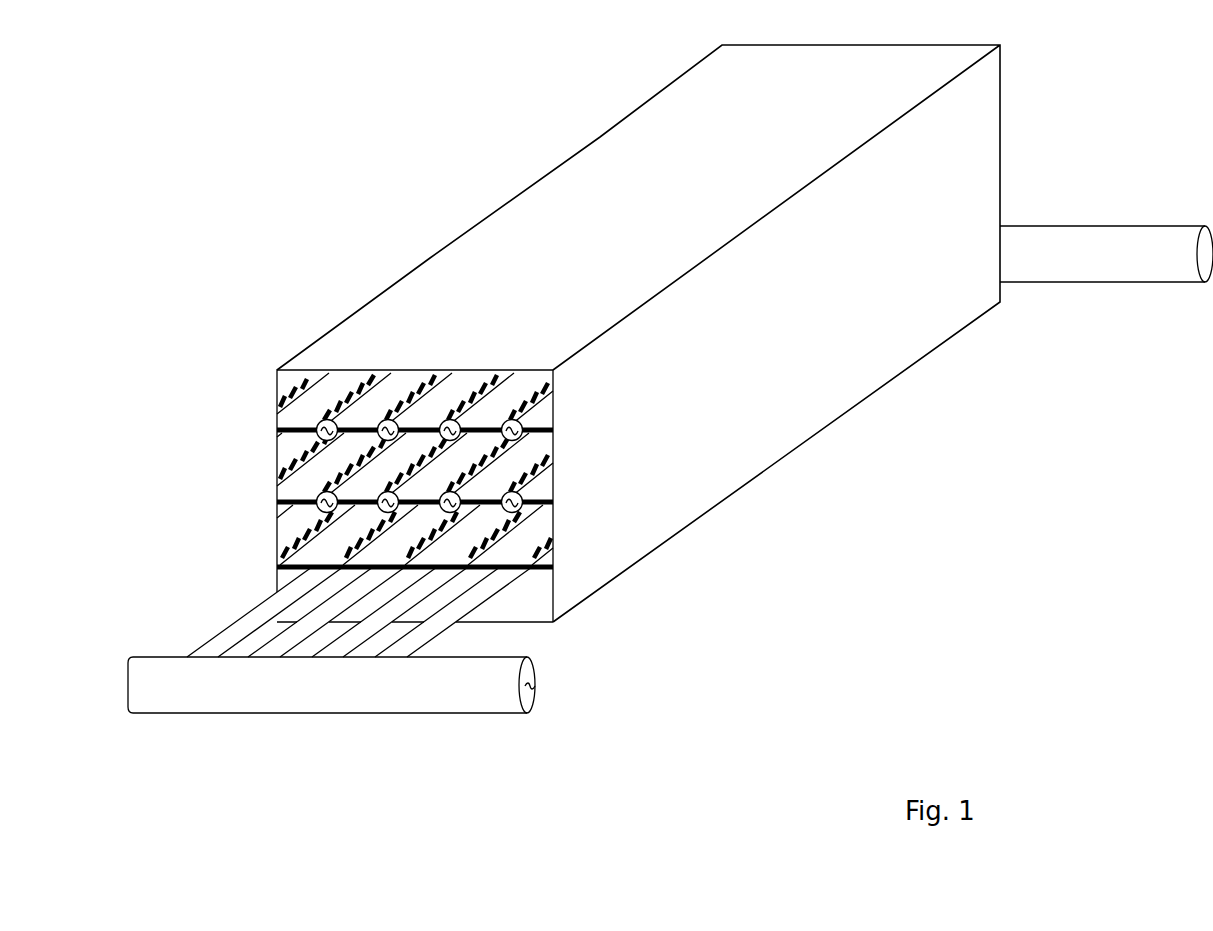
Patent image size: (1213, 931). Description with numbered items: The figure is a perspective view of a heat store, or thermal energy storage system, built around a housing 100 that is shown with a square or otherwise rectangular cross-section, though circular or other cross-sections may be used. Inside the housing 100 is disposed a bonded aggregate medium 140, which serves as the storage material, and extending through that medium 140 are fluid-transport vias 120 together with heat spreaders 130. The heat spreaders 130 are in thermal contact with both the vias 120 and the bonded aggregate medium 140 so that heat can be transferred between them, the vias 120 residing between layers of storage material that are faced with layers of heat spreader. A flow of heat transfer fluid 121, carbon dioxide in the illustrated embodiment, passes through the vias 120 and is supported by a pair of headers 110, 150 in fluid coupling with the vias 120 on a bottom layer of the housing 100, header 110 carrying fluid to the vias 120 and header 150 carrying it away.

The housing 100 is at (337, 307).
The header 110 is at (331, 685).
The fluid-transport vias 120 is at (222, 610).
The heat transfer fluid 121 is at (512, 420).
The heat spreader 130 is at (318, 472).
The bonded aggregate medium 140 is at (290, 385).
The header 150 is at (1106, 254).